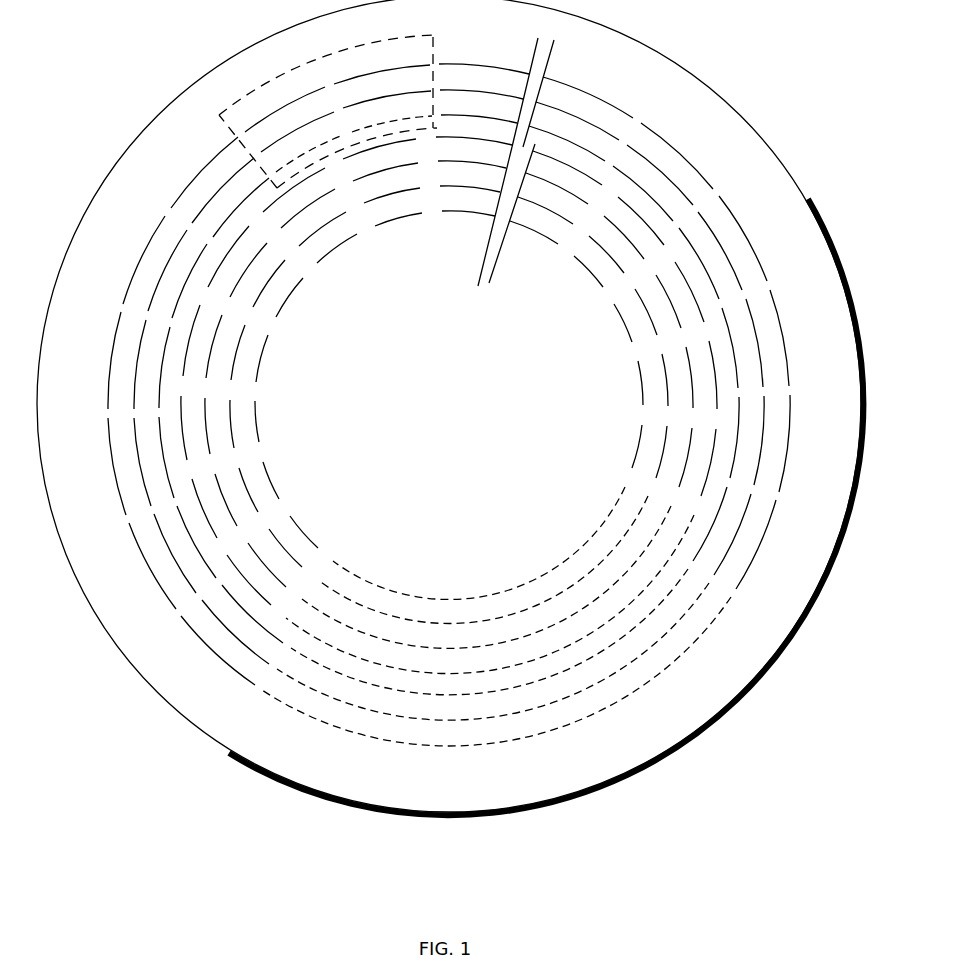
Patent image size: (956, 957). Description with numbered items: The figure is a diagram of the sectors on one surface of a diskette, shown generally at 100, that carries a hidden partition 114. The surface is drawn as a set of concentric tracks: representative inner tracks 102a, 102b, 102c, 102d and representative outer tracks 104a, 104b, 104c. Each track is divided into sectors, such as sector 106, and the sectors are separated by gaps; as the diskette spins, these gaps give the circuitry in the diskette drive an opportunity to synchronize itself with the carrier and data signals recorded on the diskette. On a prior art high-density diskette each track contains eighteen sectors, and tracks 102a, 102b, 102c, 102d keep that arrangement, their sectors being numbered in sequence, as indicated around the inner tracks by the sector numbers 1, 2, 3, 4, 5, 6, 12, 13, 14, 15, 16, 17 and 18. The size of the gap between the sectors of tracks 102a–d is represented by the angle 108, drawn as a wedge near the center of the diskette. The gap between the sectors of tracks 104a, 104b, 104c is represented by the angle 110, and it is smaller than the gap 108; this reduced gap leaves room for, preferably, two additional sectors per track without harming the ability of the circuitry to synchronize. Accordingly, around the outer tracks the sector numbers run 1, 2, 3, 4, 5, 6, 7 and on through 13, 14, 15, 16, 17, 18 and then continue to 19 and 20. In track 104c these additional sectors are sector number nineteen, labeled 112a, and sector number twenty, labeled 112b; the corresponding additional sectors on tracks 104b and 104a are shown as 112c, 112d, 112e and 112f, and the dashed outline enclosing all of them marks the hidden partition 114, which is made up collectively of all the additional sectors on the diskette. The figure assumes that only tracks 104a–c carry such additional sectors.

The diskette surface 100 is at (167, 767).
The track 102a is at (372, 582).
The track 102b is at (369, 604).
The track 102c is at (386, 637).
The track 102d is at (376, 662).
The track 104a is at (394, 695).
The track 104b is at (398, 705).
The track 104c is at (387, 733).
The sector 106 is at (651, 129).
The angle 108 is at (519, 273).
The angle 110 is at (513, 43).
The additional sector 112a is at (313, 98).
The additional sector 112b is at (348, 85).
The additional sector 112c is at (294, 114).
The additional sector 112d is at (410, 82).
The additional sector 112e is at (316, 134).
The additional sector 112f is at (407, 110).
The hidden partition 114 is at (220, 122).
The sector number 1 is at (478, 141).
The sector number 2 is at (564, 162).
The sector number 3 is at (636, 213).
The sector number 4 is at (690, 284).
The sector number 5 is at (712, 362).
The sector number 6 is at (713, 447).
The sector number 7 is at (781, 546).
The sector number 12 is at (325, 522).
The sector number 13 is at (243, 565).
The sector number 14 is at (200, 493).
The sector number 15 is at (187, 412).
The sector number 16 is at (200, 326).
The sector number 17 is at (235, 255).
The sector number 18 is at (294, 199).
The sector number 19 is at (268, 100).
The sector number 20 is at (375, 60).